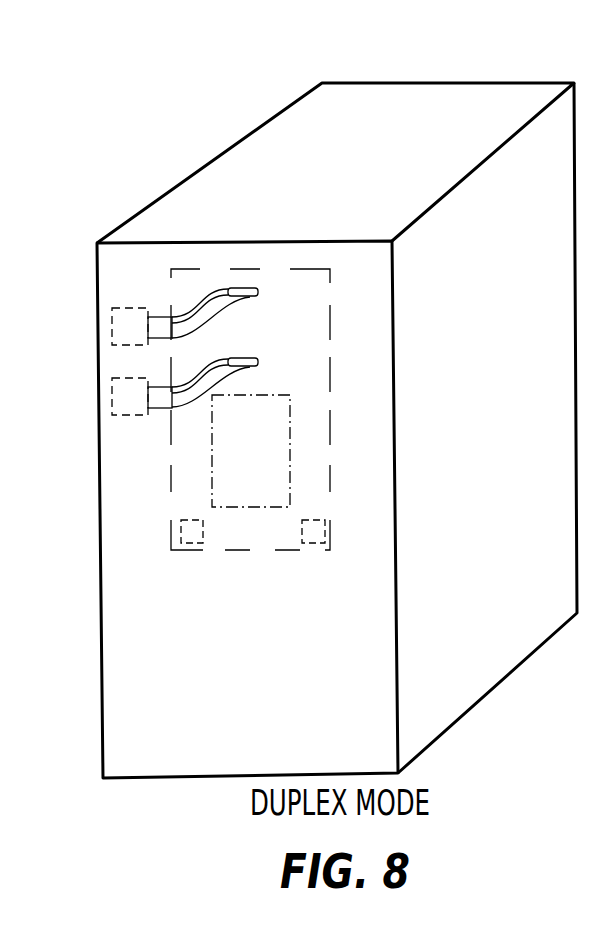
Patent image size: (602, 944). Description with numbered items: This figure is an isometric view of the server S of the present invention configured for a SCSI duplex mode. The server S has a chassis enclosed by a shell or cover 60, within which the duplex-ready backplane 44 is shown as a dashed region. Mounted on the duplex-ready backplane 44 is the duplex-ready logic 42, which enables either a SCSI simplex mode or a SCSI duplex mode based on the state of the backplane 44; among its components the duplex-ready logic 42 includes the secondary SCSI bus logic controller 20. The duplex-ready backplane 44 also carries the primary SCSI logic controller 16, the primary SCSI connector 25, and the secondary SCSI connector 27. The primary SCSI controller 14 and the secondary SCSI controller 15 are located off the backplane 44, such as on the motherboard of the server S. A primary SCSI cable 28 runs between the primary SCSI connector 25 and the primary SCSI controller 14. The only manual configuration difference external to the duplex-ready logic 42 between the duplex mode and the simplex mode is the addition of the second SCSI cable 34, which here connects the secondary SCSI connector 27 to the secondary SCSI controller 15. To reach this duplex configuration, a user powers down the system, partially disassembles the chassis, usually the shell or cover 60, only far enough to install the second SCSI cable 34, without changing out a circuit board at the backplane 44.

The server S is at (190, 94).
The shell or cover 60 is at (498, 82).
The primary SCSI controller 14 is at (135, 305).
The secondary SCSI controller 15 is at (128, 417).
The primary SCSI logic controller 16 is at (193, 518).
The secondary SCSI bus logic controller 20 is at (316, 518).
The primary SCSI connector 25 is at (258, 291).
The secondary SCSI connector 27 is at (258, 361).
The primary SCSI cable 28 is at (216, 311).
The second SCSI cable 34 is at (224, 362).
The duplex-ready logic 42 is at (276, 395).
The duplex-ready backplane 44 is at (333, 316).